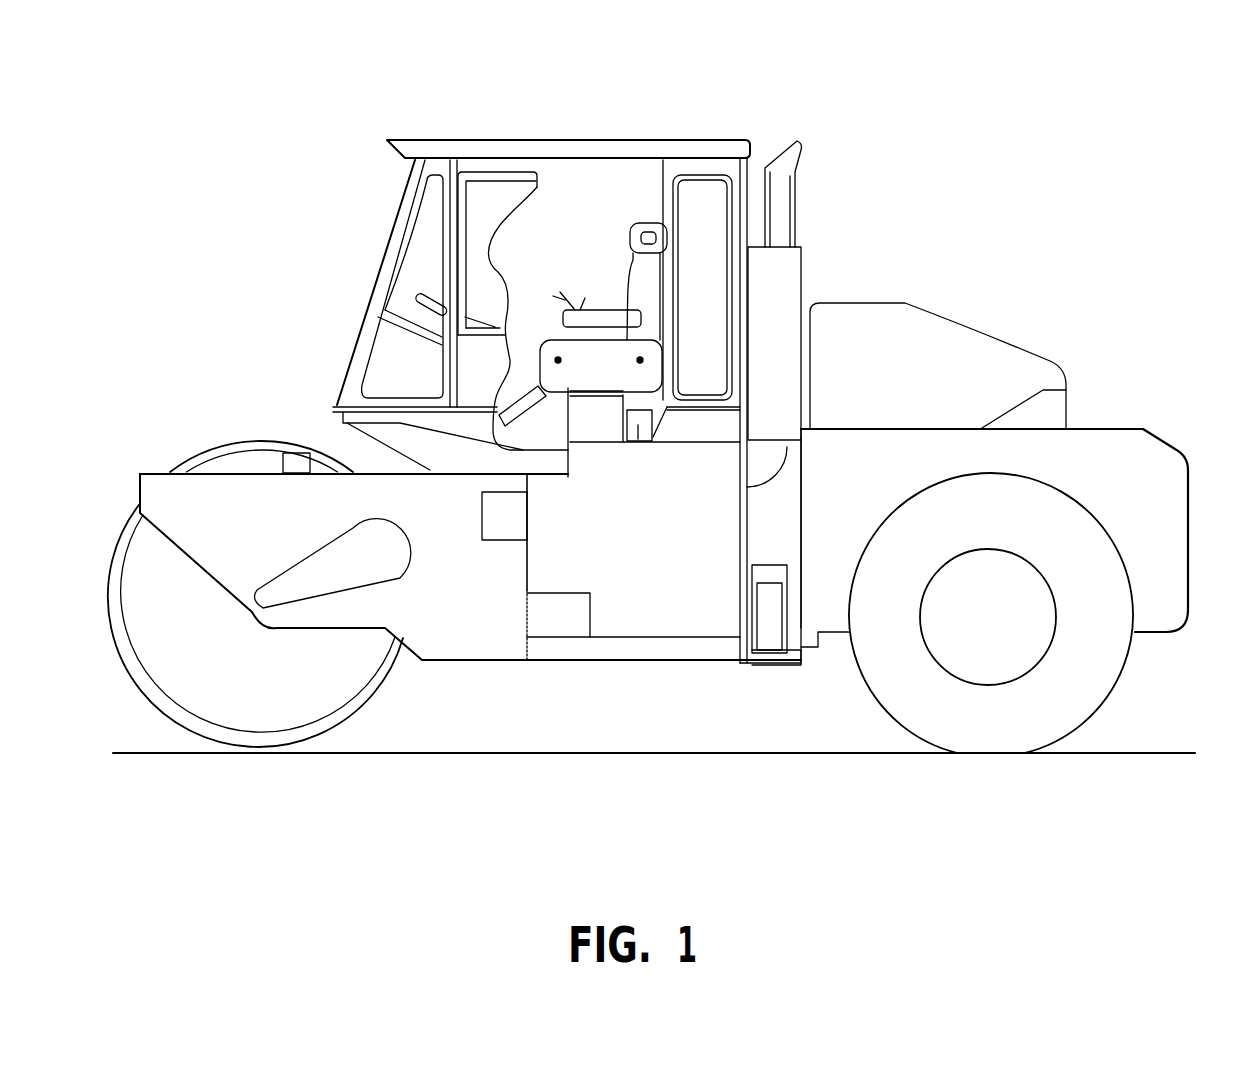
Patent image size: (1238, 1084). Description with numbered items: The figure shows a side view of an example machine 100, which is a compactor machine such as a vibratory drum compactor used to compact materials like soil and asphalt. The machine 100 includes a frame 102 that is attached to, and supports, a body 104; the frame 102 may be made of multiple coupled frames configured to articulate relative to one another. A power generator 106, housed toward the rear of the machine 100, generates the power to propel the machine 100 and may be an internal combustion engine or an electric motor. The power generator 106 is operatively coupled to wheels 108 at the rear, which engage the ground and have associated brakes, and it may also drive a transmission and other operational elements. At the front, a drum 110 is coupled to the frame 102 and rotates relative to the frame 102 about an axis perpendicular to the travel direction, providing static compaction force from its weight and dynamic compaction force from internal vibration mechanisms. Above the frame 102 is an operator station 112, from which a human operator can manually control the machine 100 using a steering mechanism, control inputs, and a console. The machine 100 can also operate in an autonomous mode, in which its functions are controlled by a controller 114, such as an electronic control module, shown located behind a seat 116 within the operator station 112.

The machine 100 is at (476, 68).
The frame 102 is at (630, 665).
The body 104 is at (1117, 431).
The power generator 106 is at (942, 318).
The wheels 108 is at (985, 745).
The drum 110 is at (247, 437).
The operator station 112 is at (610, 140).
The controller 114 is at (637, 442).
The seat 116 is at (647, 338).